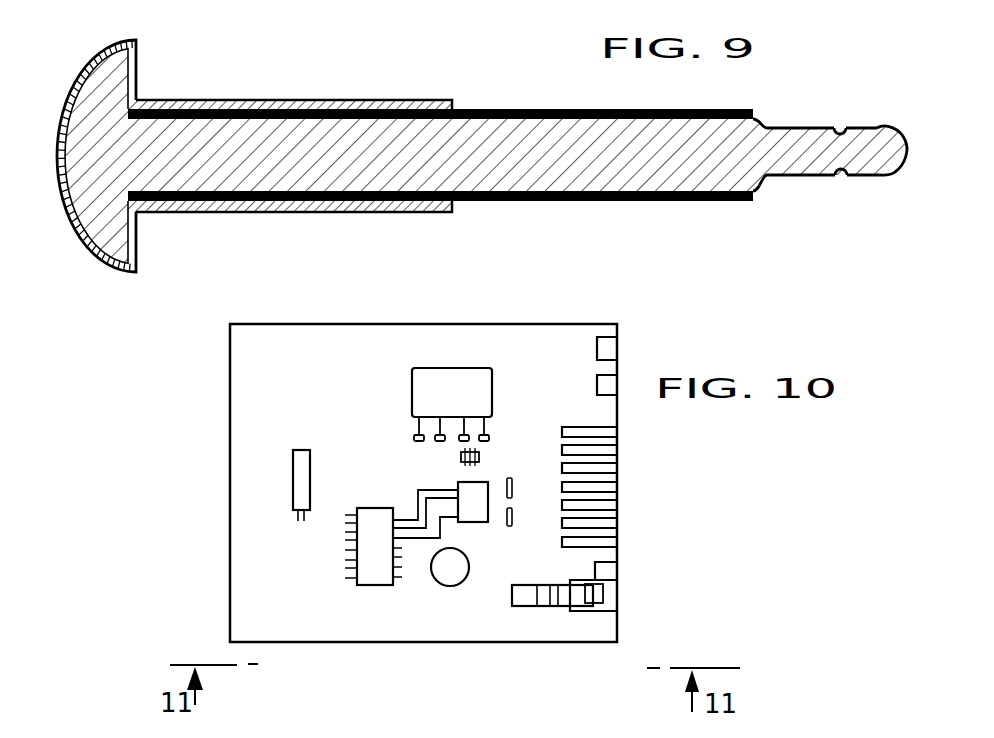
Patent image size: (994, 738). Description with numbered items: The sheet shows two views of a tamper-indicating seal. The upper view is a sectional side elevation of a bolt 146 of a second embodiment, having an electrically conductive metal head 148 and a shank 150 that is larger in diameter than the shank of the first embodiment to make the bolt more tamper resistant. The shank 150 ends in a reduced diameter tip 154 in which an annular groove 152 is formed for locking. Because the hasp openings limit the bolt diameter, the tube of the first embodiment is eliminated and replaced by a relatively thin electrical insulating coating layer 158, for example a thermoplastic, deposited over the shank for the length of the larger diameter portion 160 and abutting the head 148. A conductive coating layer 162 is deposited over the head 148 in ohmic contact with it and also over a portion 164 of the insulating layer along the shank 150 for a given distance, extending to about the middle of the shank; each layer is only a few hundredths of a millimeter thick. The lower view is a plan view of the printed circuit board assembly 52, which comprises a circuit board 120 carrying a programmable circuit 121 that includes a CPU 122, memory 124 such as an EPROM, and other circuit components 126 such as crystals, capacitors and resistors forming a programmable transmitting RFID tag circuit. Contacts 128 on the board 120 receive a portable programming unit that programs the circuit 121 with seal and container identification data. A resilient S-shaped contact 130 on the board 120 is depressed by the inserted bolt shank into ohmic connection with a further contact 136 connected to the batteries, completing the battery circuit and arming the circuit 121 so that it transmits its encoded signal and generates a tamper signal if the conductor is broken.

In FIG. 9, the bolt 146 is at (342, 78).
In FIG. 9, the head 148 is at (104, 190).
In FIG. 9, the shank 150 is at (615, 167).
In FIG. 9, the annular groove 152 is at (843, 126).
In FIG. 9, the reduced diameter tip 154 is at (878, 127).
In FIG. 9, the electrical insulating coating layer 158 is at (518, 202).
In FIG. 9, the larger diameter portion 160 is at (530, 135).
In FIG. 9, the conductive coating layer 162 is at (112, 272).
In FIG. 9, the portion of the insulating layer 164 is at (337, 211).
In FIG. 10, the circuit board 120 is at (477, 642).
In FIG. 10, the programmable circuit 121 is at (254, 507).
In FIG. 10, the CPU 122 is at (470, 382).
In FIG. 10, the memory 124 is at (363, 552).
In FIG. 10, the circuit components 126 is at (303, 450).
In FIG. 10, the contacts 128 is at (612, 522).
In FIG. 10, the resilient contact 130 is at (592, 600).
In FIG. 10, the further contact 136 is at (610, 607).
In FIG. 10, the printed circuit board assembly 52 is at (668, 491).